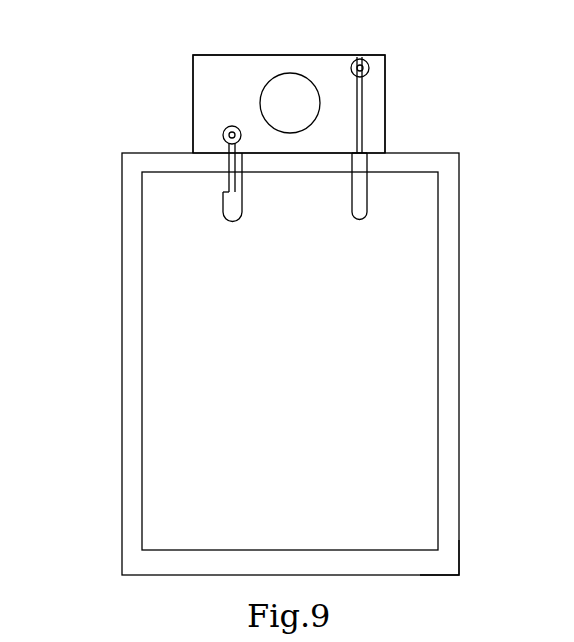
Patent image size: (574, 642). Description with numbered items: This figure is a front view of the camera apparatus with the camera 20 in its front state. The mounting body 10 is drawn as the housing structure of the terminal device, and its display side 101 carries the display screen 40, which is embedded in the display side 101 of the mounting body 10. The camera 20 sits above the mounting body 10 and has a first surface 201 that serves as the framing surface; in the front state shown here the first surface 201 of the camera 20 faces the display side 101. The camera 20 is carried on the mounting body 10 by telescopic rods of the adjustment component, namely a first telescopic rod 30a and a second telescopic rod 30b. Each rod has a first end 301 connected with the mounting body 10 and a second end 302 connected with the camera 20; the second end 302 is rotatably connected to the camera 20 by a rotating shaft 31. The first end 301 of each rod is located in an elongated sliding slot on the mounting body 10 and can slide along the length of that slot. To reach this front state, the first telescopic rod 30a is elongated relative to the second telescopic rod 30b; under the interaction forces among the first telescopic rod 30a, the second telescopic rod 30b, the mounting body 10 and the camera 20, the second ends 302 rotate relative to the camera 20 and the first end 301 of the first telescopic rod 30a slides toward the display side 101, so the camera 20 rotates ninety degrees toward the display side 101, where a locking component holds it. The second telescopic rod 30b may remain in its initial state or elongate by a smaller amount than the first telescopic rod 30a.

The mounting body 10 is at (118, 393).
The display screen 40 is at (413, 358).
The display side 101 is at (448, 563).
The camera 20 is at (322, 54).
The first surface 201 is at (242, 78).
The rotating shaft 31 is at (222, 137).
The second end 302 is at (232, 153).
The first end 301 is at (238, 222).
The first telescopic rod 30a is at (368, 152).
The second telescopic rod 30b is at (223, 192).